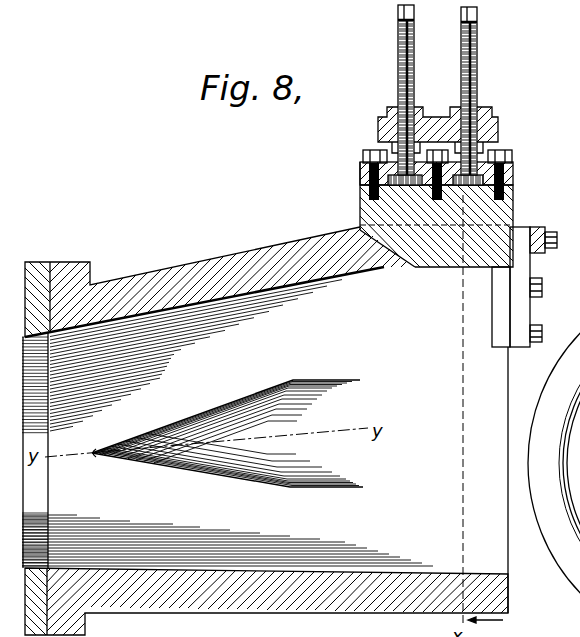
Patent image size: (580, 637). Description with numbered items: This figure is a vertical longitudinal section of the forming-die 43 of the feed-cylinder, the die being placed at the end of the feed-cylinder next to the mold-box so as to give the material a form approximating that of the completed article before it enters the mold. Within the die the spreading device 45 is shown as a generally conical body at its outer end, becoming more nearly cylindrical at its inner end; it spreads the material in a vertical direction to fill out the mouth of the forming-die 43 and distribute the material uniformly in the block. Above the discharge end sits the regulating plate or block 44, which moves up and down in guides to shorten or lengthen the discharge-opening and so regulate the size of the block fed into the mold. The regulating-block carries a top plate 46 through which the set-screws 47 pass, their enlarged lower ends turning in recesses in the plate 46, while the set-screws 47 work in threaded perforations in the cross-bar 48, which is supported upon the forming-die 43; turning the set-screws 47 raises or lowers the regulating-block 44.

The forming-die 43 is at (262, 253).
The regulating plate or block 44 is at (515, 205).
The spreading device 45 is at (335, 387).
The top plate 46 is at (360, 177).
The set-screws 47 is at (398, 70).
The cross-bar 48 is at (498, 123).